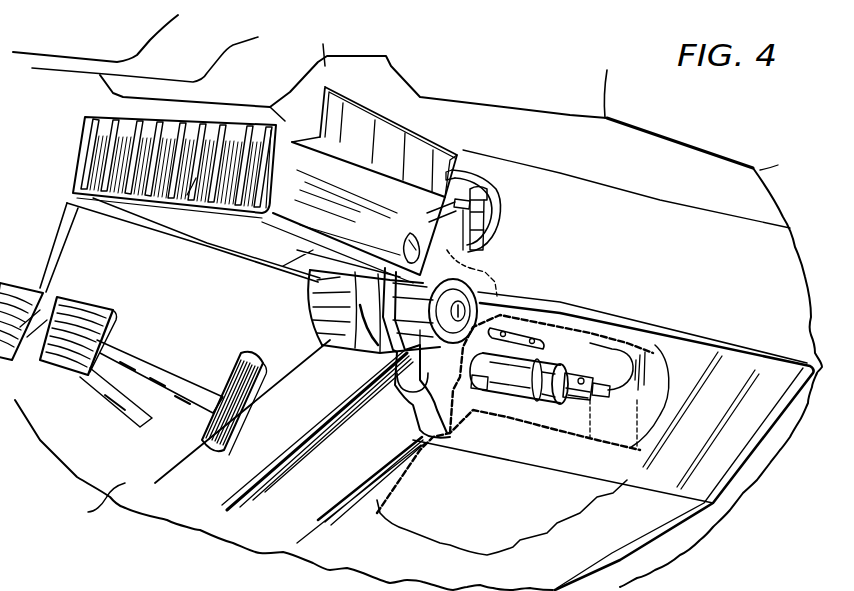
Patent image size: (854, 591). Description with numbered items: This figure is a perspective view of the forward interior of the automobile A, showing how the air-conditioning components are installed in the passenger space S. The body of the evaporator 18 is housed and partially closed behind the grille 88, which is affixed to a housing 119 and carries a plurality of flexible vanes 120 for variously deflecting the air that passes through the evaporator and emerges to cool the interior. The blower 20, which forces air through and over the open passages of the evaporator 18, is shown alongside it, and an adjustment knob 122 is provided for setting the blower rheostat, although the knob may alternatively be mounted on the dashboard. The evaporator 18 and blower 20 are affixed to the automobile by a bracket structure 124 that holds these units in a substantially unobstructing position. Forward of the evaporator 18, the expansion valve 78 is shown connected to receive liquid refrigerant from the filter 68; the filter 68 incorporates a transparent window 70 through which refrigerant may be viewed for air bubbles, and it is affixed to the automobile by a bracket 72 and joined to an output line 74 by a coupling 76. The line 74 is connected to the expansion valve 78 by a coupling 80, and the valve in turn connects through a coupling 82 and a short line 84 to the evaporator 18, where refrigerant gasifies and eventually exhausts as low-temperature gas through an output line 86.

The evaporator 18 is at (277, 282).
The blower 20 is at (367, 353).
The filter 68 is at (516, 403).
The transparent window 70 is at (580, 372).
The bracket 72 is at (548, 317).
The output line 74 is at (637, 390).
The coupling 76 is at (598, 395).
The expansion valve 78 is at (490, 212).
The coupling 80 is at (490, 233).
The coupling 82 is at (487, 175).
The short line 84 is at (440, 220).
The output line 86 is at (423, 277).
The grille 88 is at (187, 190).
The housing 119 is at (212, 242).
The flexible vanes 120 is at (187, 197).
The adjustment knob 122 is at (404, 245).
The bracket structure 124 is at (427, 137).
The automobile A is at (776, 160).
The passenger space S is at (95, 500).